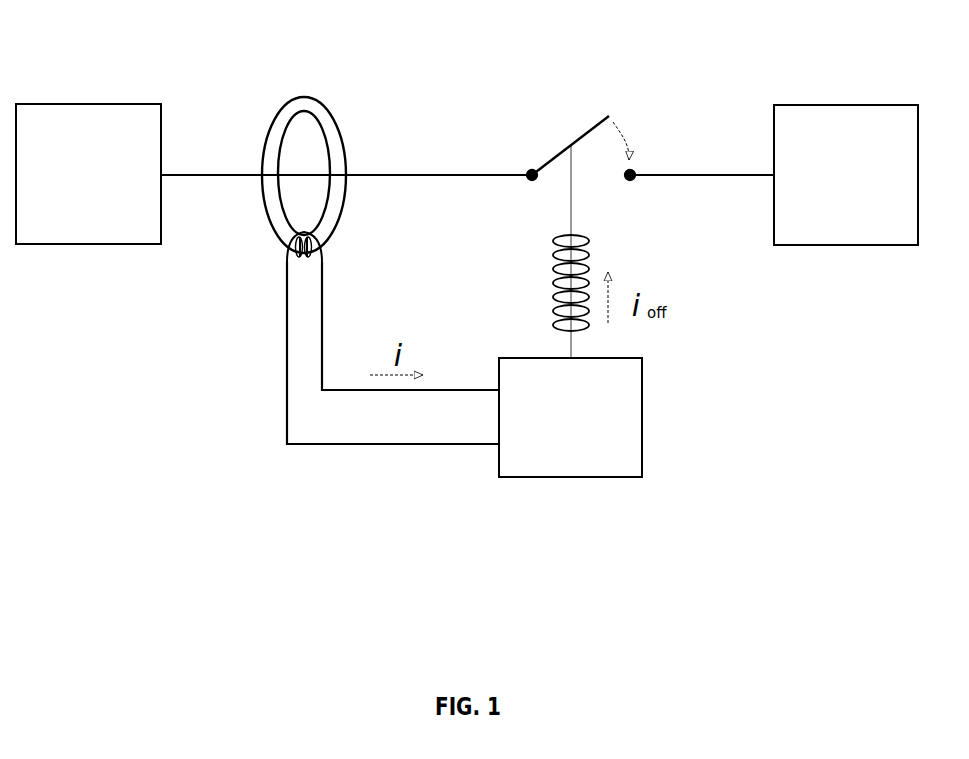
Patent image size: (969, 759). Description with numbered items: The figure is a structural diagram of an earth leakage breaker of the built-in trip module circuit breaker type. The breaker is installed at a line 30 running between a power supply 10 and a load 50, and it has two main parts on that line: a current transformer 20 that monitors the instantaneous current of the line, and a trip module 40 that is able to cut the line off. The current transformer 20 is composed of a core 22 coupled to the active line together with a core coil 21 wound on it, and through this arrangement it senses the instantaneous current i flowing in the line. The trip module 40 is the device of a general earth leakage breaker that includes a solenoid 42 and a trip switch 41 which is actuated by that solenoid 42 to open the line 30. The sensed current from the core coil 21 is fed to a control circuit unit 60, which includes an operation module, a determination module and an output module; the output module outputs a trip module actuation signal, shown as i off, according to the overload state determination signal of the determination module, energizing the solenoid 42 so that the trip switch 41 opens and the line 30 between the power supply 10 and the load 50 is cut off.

The power supply 10 is at (87, 103).
The current transformer 20 is at (269, 172).
The core coil 21 is at (291, 238).
The core 22 is at (270, 204).
The line 30 is at (436, 174).
The trip module 40 is at (604, 191).
The trip switch 41 is at (607, 113).
The solenoid 42 is at (590, 247).
The load 50 is at (845, 104).
The control circuit unit 60 is at (643, 418).